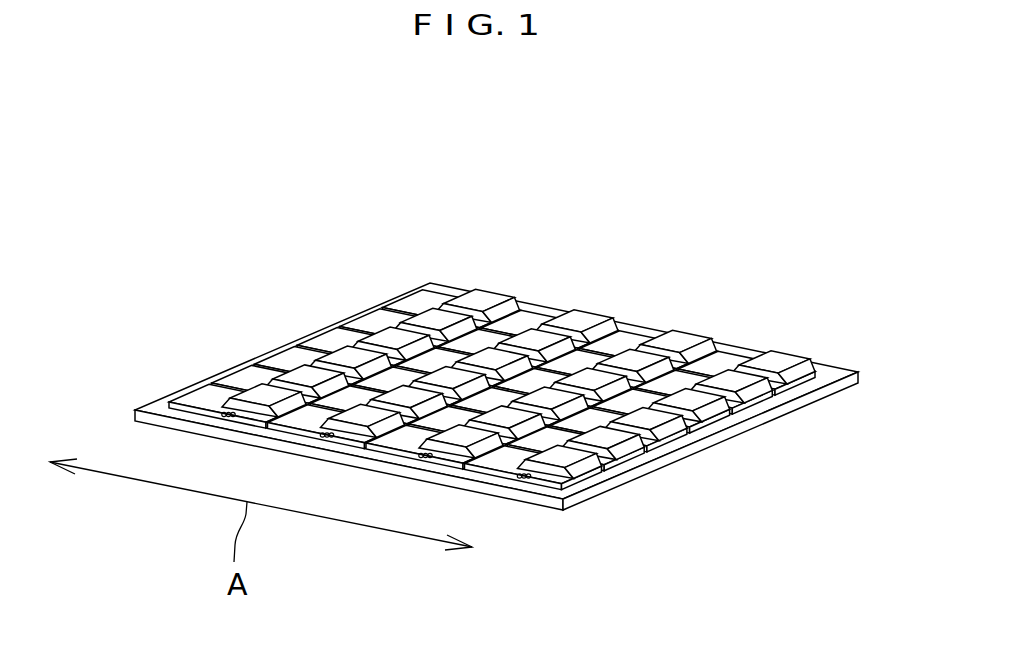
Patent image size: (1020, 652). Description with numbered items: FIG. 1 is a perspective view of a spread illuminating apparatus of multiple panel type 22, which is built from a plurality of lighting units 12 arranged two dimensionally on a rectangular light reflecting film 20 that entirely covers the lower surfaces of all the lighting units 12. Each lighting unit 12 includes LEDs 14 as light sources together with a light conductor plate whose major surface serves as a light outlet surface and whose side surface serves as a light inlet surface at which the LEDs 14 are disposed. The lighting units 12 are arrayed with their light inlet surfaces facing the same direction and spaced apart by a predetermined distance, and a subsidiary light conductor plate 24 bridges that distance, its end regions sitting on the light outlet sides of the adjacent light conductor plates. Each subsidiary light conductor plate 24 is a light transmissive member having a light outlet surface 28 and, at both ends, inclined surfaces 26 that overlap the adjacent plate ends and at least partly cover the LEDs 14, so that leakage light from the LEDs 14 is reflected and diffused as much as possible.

The lighting unit 12 is at (736, 354).
The LED 14 is at (527, 480).
The light reflecting film 20 is at (691, 454).
The spread illuminating apparatus of multiple panel type 22 is at (523, 336).
The subsidiary light conductor plate 24 is at (673, 327).
The inclined surface 26 is at (762, 350).
The light outlet surface 28 is at (786, 349).